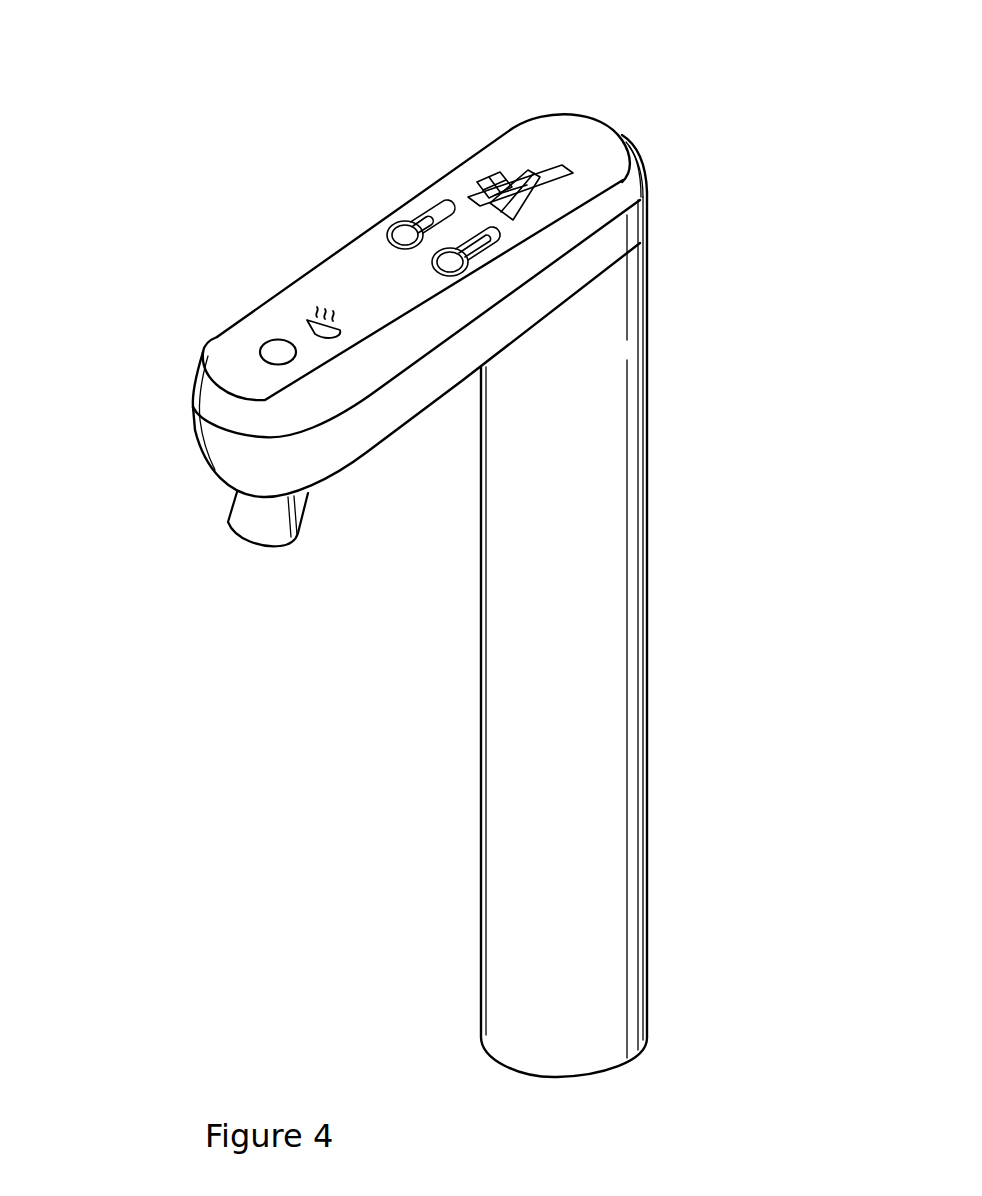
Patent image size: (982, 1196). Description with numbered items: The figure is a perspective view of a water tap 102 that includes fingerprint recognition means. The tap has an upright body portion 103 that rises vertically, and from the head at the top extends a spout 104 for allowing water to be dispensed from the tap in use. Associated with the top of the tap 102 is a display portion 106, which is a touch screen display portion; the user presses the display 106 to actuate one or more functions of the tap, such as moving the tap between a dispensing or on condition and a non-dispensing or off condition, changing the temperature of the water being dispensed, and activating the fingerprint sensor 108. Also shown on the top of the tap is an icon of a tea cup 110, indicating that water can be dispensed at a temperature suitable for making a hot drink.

The water tap 102 is at (712, 480).
The upright body portion 103 is at (608, 840).
The spout 104 is at (270, 518).
The display portion 106 is at (475, 170).
The fingerprint sensor 108 is at (270, 350).
The icon of a tea cup 110 is at (303, 318).